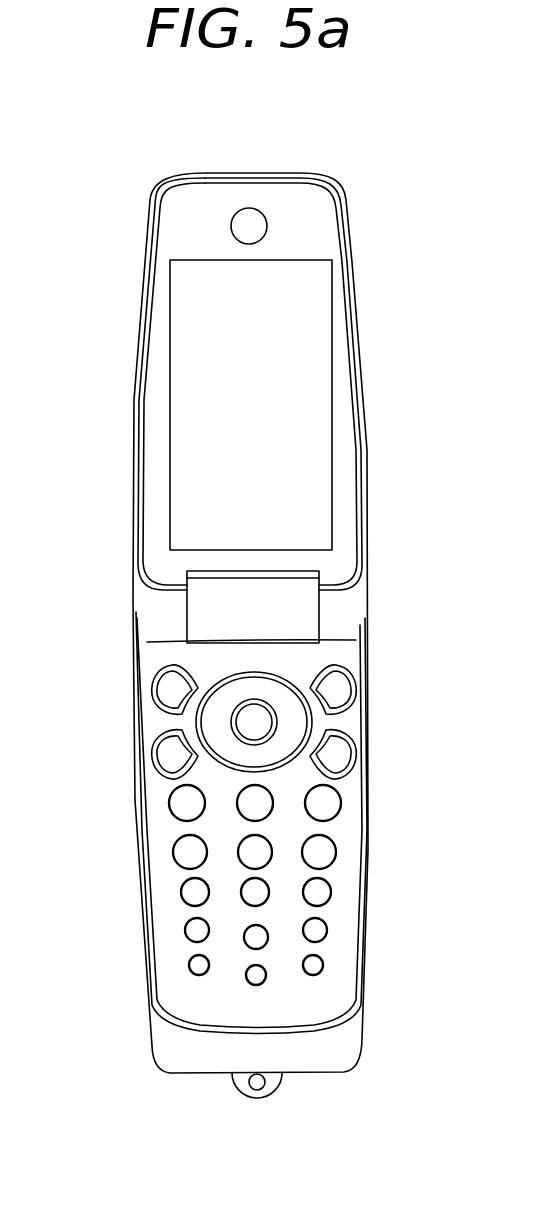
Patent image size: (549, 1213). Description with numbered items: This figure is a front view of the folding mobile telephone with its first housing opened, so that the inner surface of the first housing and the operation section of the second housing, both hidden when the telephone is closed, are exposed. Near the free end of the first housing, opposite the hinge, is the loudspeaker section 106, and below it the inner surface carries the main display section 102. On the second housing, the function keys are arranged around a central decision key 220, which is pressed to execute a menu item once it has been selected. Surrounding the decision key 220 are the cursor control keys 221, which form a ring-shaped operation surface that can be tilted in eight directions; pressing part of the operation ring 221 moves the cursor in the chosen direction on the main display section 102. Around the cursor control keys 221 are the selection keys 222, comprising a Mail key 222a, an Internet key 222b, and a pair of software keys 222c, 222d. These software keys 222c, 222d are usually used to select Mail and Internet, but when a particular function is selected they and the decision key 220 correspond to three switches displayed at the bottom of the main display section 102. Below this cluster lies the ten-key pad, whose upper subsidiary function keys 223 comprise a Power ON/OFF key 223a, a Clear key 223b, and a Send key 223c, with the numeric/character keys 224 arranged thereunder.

The main display section 102 is at (307, 418).
The loudspeaker section 106 is at (260, 228).
The decision key 220 is at (247, 728).
The cursor control keys 221 is at (277, 748).
The selection keys 222 is at (235, 658).
The Mail key 222a is at (333, 735).
The Internet key 222b is at (170, 745).
The software key 222c is at (333, 678).
The software key 222d is at (176, 682).
The subsidiary function keys 223 is at (165, 838).
The Power ON/OFF key 223a is at (332, 805).
The Clear key 223b is at (257, 812).
The Send key 223c is at (182, 803).
The numeric/character keys 224 is at (258, 897).